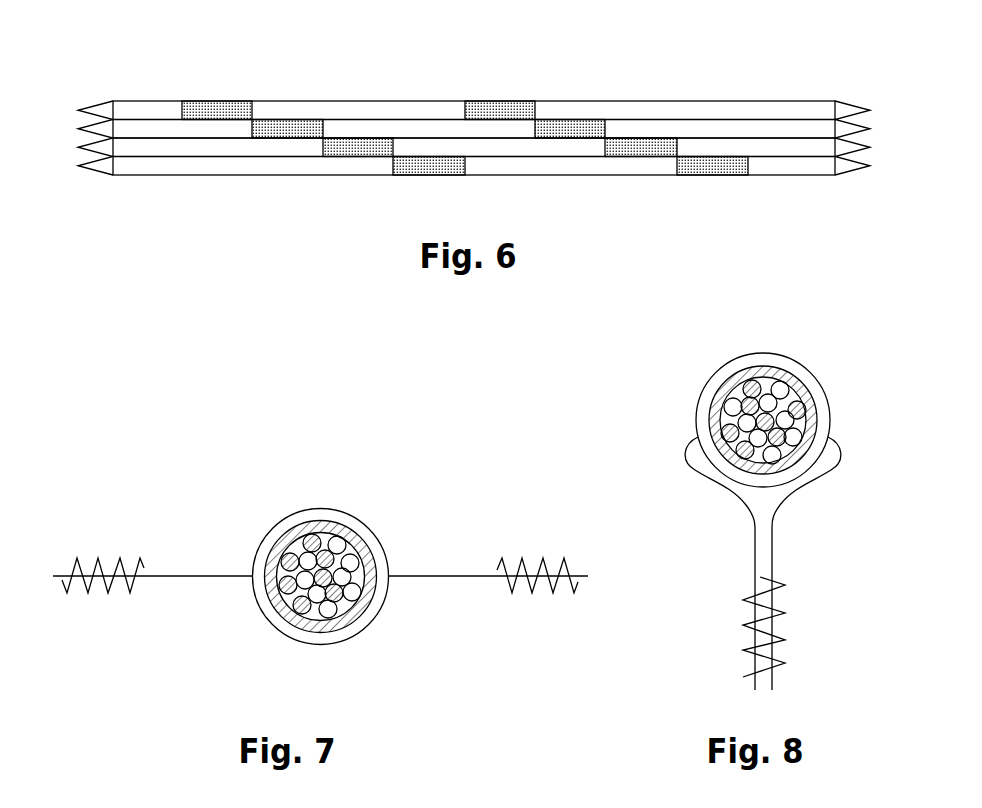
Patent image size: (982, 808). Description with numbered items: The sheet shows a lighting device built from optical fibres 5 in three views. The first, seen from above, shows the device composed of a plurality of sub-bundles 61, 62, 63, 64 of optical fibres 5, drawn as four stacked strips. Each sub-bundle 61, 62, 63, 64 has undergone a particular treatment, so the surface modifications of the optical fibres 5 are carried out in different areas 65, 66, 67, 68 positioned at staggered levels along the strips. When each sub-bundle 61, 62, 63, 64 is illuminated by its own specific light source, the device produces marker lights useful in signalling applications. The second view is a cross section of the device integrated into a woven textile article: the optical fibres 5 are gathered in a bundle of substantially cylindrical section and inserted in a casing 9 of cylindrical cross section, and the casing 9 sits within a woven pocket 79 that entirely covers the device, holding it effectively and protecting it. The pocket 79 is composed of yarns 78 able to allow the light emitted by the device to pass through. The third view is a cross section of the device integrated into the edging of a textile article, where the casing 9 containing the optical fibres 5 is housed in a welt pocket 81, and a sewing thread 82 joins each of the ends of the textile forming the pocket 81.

In FIG. 6, the sub-bundle 61 is at (127, 108).
In FIG. 6, the sub-bundle 62 is at (128, 130).
In FIG. 6, the sub-bundle 63 is at (132, 148).
In FIG. 6, the sub-bundle 64 is at (152, 163).
In FIG. 6, the area 65 is at (232, 102).
In FIG. 6, the area 66 is at (307, 119).
In FIG. 6, the area 67 is at (342, 156).
In FIG. 6, the area 68 is at (428, 170).
In FIG. 7, the optical fibres 5 is at (335, 537).
In FIG. 8, the optical fibres 5 is at (753, 388).
In FIG. 7, the casing 9 is at (357, 608).
In FIG. 8, the casing 9 is at (798, 385).
In FIG. 7, the yarns 78 is at (567, 565).
In FIG. 7, the woven pocket 79 is at (283, 520).
In FIG. 8, the welt pocket 81 is at (837, 473).
In FIG. 8, the sewing thread 82 is at (748, 642).